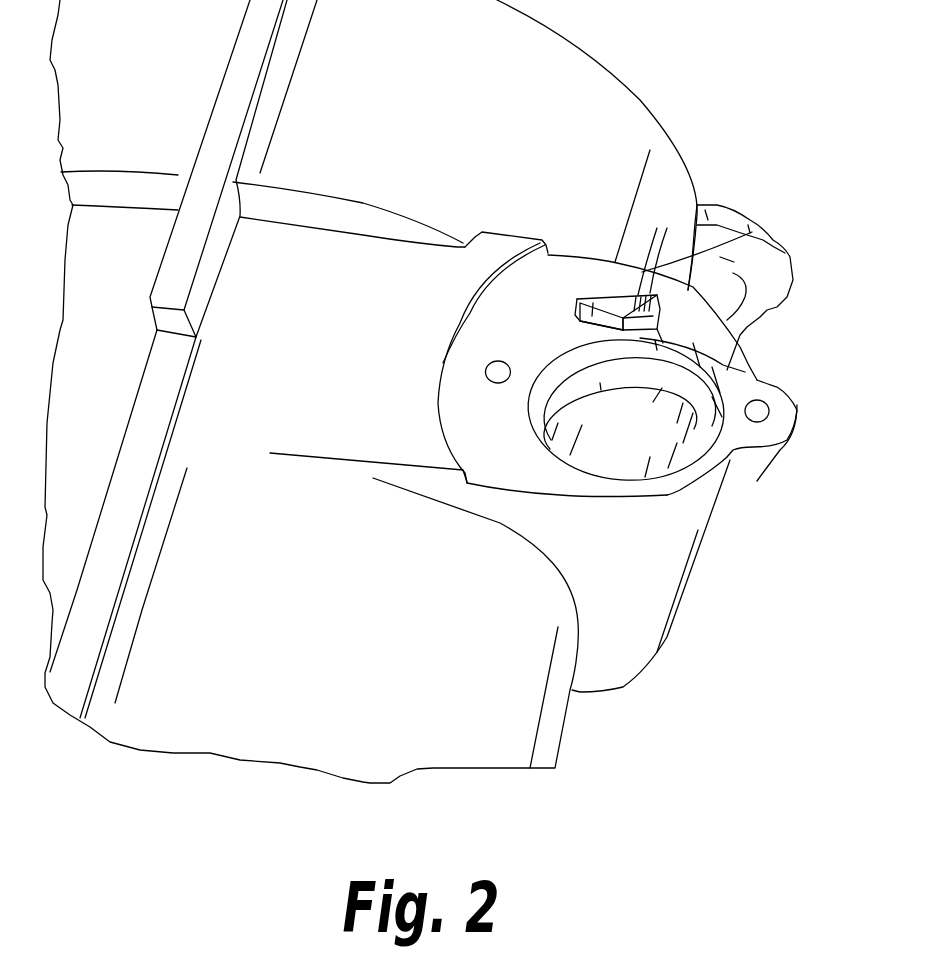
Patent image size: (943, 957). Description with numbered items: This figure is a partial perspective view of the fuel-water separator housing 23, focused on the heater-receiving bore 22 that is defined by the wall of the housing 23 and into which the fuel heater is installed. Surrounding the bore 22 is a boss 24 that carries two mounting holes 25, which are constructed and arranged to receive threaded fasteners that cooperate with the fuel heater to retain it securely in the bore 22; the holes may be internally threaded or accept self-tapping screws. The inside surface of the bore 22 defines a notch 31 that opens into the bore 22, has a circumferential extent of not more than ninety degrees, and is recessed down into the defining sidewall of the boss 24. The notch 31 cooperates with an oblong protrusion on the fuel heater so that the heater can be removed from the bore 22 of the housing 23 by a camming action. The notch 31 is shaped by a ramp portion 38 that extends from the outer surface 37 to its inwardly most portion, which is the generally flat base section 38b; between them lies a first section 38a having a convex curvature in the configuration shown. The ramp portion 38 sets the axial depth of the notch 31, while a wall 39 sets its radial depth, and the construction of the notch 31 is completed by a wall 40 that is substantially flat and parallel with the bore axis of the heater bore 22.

The heater bore 22 is at (632, 453).
The separator housing 23 is at (657, 168).
The boss 24 is at (733, 360).
The mounting holes 25 is at (493, 363).
The notch 31 is at (623, 272).
The outer surface 37 is at (500, 455).
The ramp portion 38 is at (586, 292).
The first section 38a is at (576, 312).
The base section 38b is at (752, 232).
The wall 39 is at (657, 243).
The wall 40 is at (723, 252).